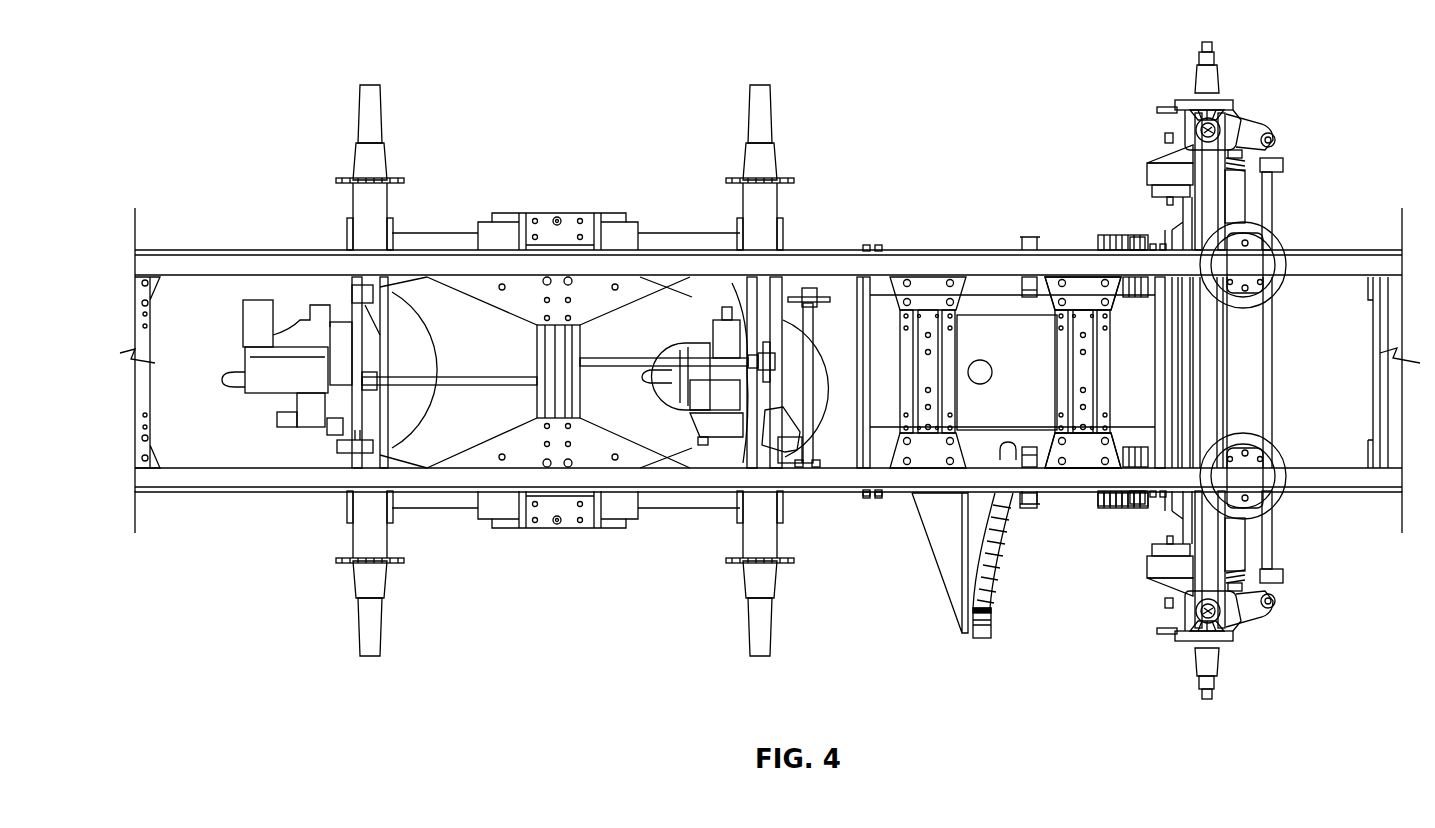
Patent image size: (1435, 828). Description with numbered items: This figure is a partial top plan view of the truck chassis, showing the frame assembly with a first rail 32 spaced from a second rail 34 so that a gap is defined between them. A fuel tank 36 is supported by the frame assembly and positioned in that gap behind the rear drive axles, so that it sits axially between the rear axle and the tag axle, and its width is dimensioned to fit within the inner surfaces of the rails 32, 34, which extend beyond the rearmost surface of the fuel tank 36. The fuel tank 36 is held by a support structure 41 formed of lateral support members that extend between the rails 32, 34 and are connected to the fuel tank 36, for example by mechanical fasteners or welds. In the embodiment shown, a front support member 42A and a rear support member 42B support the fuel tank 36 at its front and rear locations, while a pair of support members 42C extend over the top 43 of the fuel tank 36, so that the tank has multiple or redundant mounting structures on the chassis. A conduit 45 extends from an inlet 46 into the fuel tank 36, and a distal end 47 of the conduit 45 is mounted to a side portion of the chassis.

The first rail 32 is at (240, 486).
The second rail 34 is at (248, 259).
The fuel tank 36 is at (995, 410).
The support structure 41 is at (1090, 284).
The front support member 42A is at (865, 323).
The rear support member 42B is at (928, 322).
The support members 42C is at (1160, 432).
The top 43 is at (883, 422).
The conduit 45 is at (1014, 456).
The inlet 46 is at (988, 570).
The distal end 47 is at (993, 631).